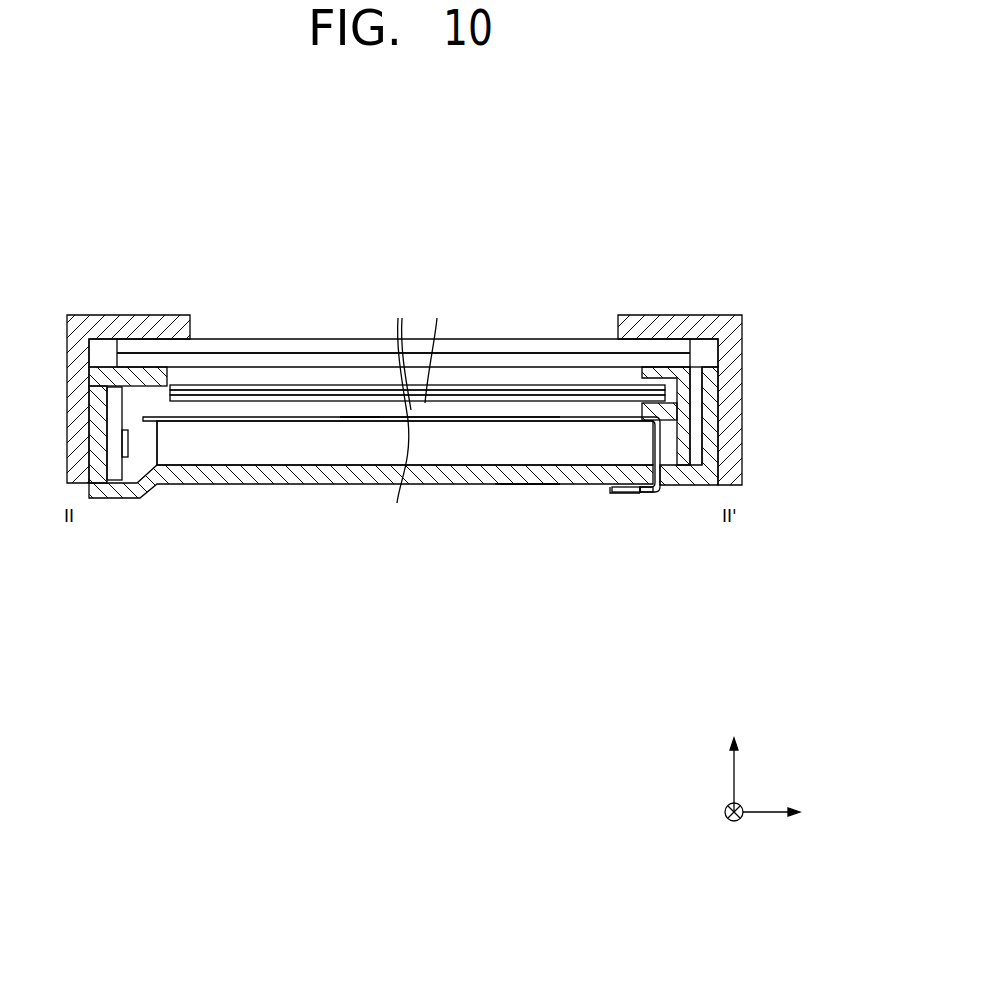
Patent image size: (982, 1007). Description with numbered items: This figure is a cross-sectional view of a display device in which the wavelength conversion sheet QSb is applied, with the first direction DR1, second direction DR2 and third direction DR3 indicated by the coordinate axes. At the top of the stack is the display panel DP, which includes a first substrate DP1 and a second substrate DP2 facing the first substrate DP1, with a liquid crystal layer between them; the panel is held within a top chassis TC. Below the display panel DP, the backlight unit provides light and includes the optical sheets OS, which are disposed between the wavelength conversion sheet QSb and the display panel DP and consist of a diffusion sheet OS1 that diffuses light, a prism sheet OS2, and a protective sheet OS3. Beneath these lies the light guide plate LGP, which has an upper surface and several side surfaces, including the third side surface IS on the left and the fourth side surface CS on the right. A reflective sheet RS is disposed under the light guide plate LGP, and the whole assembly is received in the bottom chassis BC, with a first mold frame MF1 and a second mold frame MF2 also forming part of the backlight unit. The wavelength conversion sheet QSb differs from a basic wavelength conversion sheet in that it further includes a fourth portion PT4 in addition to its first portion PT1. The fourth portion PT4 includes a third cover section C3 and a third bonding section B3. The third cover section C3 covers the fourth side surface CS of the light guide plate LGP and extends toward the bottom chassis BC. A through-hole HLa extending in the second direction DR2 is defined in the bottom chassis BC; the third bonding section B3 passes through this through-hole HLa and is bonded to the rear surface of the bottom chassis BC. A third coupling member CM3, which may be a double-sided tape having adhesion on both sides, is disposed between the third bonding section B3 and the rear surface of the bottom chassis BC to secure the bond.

The top chassis TC is at (740, 330).
The third side surface IS is at (157, 438).
The display panel DP is at (403, 289).
The first substrate DP1 is at (563, 360).
The second substrate DP2 is at (600, 345).
The optical sheets OS is at (417, 306).
The diffusion sheet OS1 is at (423, 398).
The prism sheet OS2 is at (475, 395).
The protective sheet OS3 is at (528, 390).
The first mold frame MF1 is at (703, 375).
The bottom chassis BC is at (710, 407).
The second mold frame MF2 is at (712, 437).
The light guide plate LGP is at (697, 448).
The reflective sheet RS is at (738, 472).
The fourth side surface CS is at (665, 488).
The third coupling member CM3 is at (615, 493).
The through-hole HLa is at (645, 492).
The third bonding section B3 is at (612, 495).
The third cover section C3 is at (538, 482).
The first portion PT1 is at (360, 432).
The fourth portion PT4 is at (560, 538).
The wavelength conversion sheet QSb is at (548, 588).
The first direction DR1 is at (794, 813).
The second direction DR2 is at (737, 827).
The third direction DR3 is at (734, 763).